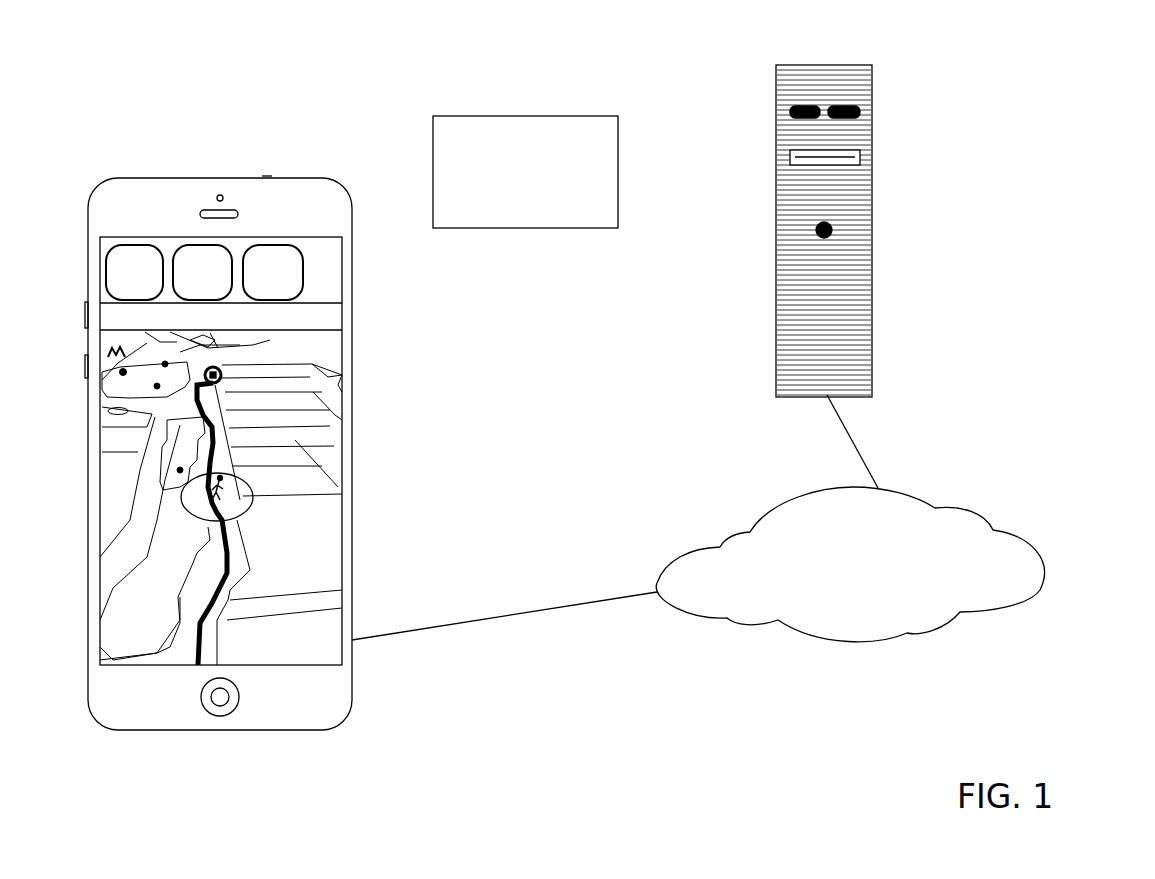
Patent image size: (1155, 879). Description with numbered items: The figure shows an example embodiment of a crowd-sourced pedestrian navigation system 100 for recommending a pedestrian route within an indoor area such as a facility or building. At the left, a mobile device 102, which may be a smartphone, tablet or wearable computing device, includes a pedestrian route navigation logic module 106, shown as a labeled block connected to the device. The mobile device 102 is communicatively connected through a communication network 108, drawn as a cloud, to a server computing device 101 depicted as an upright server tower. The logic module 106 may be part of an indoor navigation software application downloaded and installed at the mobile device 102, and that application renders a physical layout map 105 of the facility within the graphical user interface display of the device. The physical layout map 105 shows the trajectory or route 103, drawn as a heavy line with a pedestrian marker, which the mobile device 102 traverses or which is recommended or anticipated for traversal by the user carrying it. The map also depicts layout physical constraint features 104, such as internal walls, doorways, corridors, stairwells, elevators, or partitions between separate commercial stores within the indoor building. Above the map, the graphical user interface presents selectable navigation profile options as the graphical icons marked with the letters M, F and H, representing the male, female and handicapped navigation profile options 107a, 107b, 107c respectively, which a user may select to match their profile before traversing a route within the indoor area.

The crowd-sourced pedestrian navigation system 100 is at (1150, 157).
The server computing device 101 is at (801, 316).
The mobile device 102 is at (433, 172).
The route 103 is at (226, 557).
The layout physical constraint features 104 is at (318, 465).
The physical layout map 105 is at (152, 634).
The pedestrian route navigation logic module 106 is at (508, 221).
The male navigation profile option 107a is at (135, 245).
The female navigation profile option 107b is at (190, 245).
The handicapped navigation profile option 107c is at (290, 245).
The communication network 108 is at (855, 601).